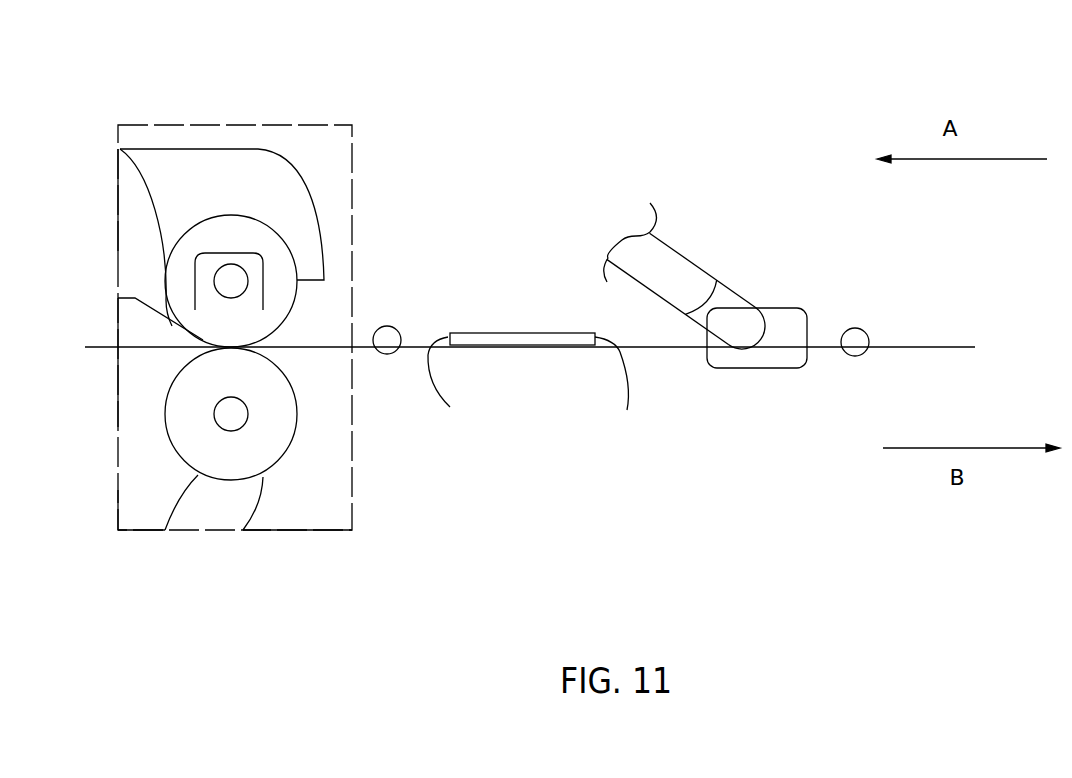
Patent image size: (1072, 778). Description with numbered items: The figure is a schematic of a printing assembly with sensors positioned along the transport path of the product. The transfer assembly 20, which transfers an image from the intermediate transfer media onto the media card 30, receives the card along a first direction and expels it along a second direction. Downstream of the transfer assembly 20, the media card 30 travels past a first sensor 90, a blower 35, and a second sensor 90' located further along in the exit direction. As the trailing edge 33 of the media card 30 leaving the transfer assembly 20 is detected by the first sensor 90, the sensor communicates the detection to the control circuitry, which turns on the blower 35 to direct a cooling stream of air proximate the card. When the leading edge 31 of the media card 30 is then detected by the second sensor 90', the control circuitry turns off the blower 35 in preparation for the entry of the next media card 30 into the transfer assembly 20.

The transfer assembly 20 is at (172, 99).
The first sensor 90 is at (393, 287).
The media card 30 is at (487, 333).
The leading edge 31 is at (454, 385).
The trailing edge 33 is at (611, 388).
The blower 35 is at (740, 258).
The second sensor 90' is at (865, 286).